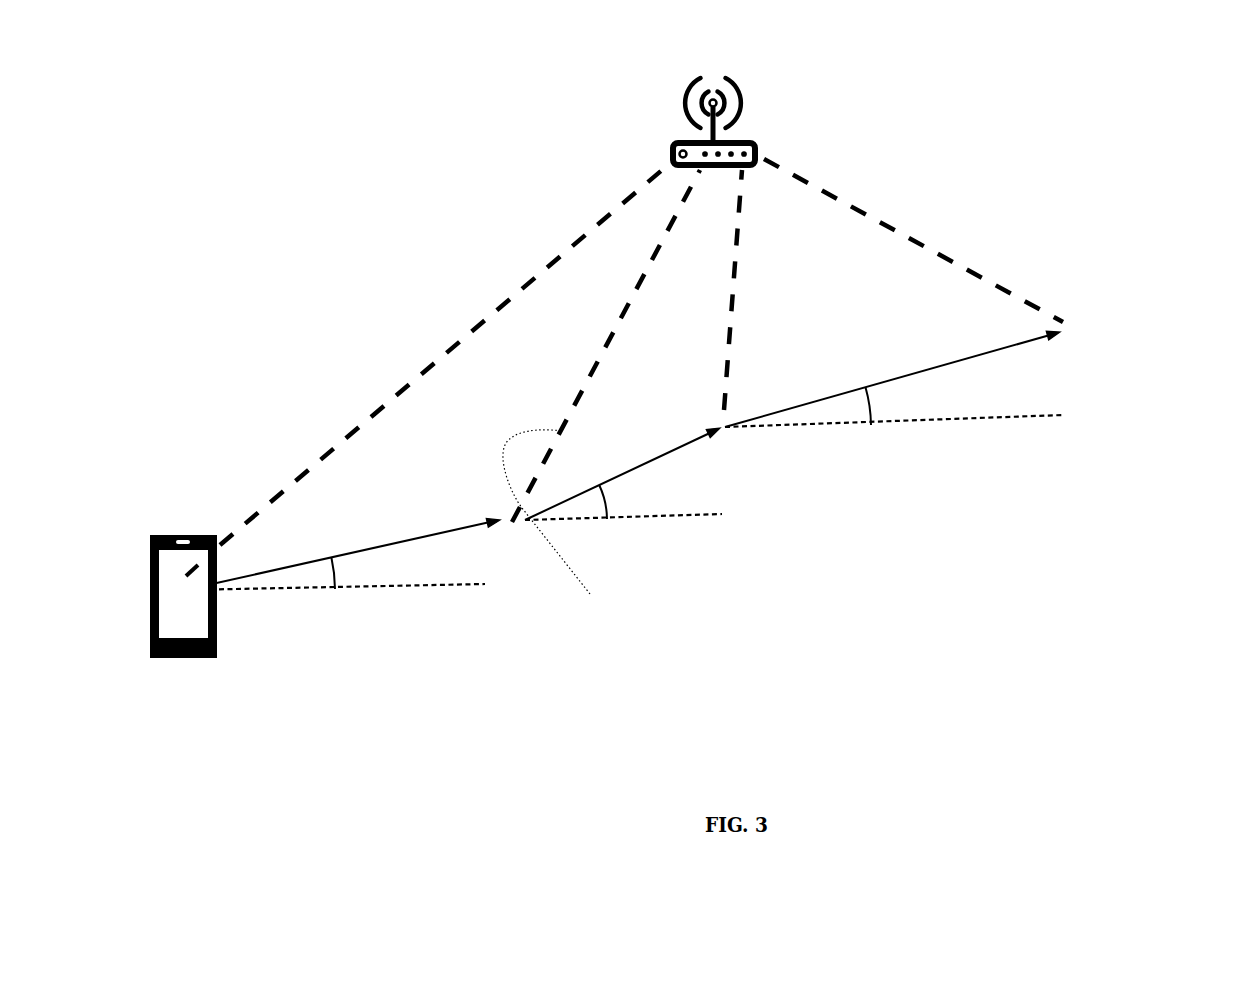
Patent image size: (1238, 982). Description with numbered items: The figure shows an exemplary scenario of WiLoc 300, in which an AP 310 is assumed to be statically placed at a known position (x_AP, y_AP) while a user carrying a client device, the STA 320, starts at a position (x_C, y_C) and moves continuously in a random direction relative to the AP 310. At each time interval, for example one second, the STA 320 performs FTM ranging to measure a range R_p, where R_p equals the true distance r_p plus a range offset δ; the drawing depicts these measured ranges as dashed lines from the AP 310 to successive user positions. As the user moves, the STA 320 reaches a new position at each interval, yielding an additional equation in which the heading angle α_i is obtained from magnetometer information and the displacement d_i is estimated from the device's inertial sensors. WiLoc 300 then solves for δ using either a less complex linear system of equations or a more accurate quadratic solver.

The WiLoc 300 is at (1197, 57).
The AP 310 is at (640, 109).
The STA 320 is at (212, 506).